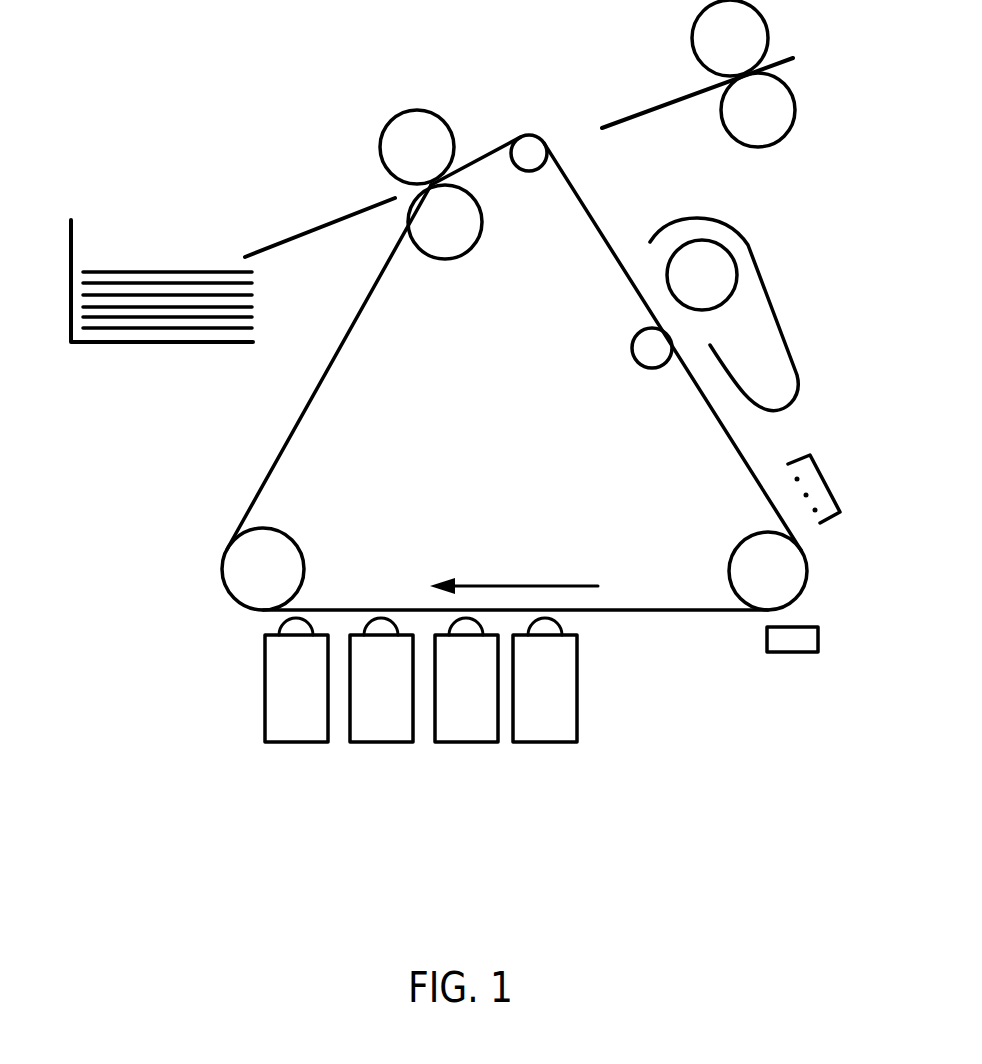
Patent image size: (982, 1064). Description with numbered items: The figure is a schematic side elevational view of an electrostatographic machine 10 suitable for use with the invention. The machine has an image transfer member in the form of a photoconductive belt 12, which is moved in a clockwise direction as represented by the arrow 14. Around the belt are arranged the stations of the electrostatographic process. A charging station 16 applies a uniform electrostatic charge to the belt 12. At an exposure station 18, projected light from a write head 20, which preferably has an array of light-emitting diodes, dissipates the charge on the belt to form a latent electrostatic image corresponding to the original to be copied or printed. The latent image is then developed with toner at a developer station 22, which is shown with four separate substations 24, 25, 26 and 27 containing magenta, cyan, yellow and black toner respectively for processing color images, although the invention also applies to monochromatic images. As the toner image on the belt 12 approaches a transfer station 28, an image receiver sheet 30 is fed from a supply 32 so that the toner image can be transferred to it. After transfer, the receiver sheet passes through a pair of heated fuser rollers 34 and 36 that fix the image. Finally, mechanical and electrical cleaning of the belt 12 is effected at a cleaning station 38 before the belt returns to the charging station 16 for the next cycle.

The electrostatographic machine 10 is at (188, 473).
The photoconductive belt 12 is at (317, 380).
The arrow 14 is at (525, 583).
The charging station 16 is at (827, 480).
The exposure station 18 is at (825, 617).
The write head 20 is at (798, 653).
The developer station 22 is at (572, 848).
The substation 24 is at (298, 742).
The substation 25 is at (387, 742).
The substation 26 is at (472, 742).
The substation 27 is at (550, 742).
The transfer station 28 is at (452, 110).
The image receiver sheet 30 is at (292, 237).
The supply 32 is at (71, 325).
The heated fuser roller 34 is at (783, 143).
The heated fuser roller 36 is at (692, 48).
The cleaning station 38 is at (795, 297).